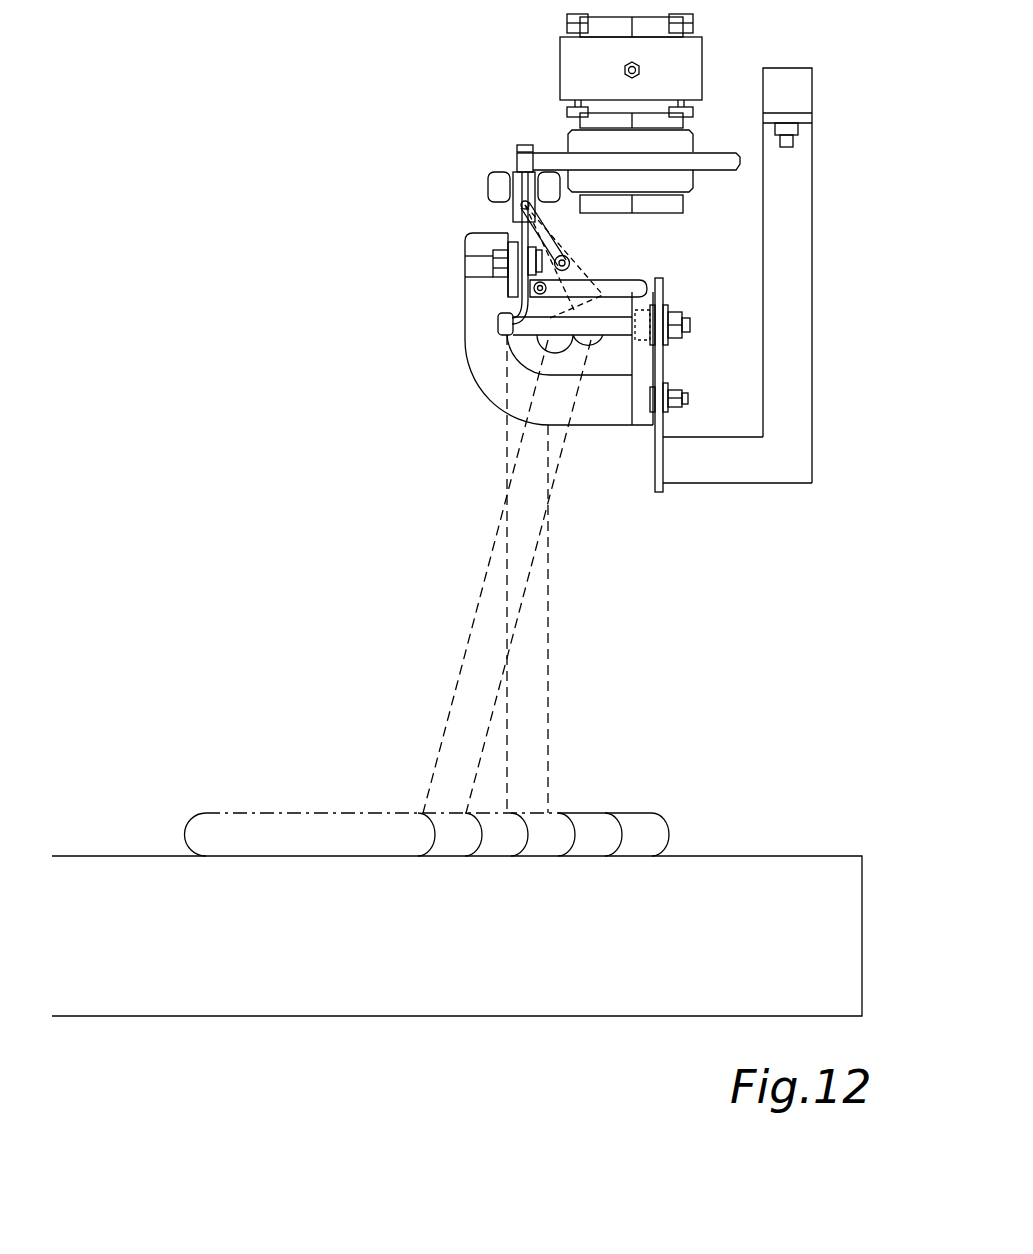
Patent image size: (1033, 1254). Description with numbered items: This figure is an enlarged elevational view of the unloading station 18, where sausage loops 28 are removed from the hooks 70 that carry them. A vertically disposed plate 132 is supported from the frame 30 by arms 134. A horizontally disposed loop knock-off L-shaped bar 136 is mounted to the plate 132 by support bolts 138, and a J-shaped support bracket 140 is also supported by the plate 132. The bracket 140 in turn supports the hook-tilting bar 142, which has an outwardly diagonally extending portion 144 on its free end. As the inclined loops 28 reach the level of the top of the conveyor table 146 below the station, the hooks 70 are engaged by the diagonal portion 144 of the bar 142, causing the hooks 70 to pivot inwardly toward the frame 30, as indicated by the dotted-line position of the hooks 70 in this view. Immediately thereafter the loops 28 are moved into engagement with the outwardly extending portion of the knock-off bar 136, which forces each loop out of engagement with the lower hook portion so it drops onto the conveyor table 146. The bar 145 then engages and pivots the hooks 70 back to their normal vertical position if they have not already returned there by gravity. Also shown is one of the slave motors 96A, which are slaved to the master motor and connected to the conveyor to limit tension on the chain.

The unloading station 18 is at (316, 206).
The sausage loops 28 is at (520, 815).
The frame 30 is at (787, 68).
The hooks 70 is at (532, 307).
The slave motors 96A is at (560, 63).
The vertically disposed plate 132 is at (658, 463).
The arms 134 is at (713, 484).
The loop knock-off L-shaped bar 136 is at (615, 325).
The support bolts 138 is at (690, 324).
The J-shaped support bracket 140 is at (484, 369).
The hook-tilting bar 142 is at (572, 261).
The outwardly diagonally extending portion 144 is at (554, 257).
The bar 145 is at (617, 282).
The conveyor table 146 is at (741, 855).